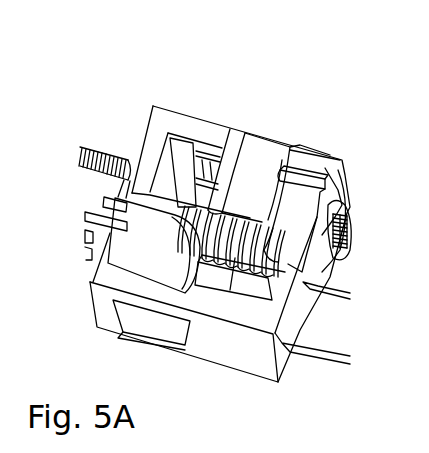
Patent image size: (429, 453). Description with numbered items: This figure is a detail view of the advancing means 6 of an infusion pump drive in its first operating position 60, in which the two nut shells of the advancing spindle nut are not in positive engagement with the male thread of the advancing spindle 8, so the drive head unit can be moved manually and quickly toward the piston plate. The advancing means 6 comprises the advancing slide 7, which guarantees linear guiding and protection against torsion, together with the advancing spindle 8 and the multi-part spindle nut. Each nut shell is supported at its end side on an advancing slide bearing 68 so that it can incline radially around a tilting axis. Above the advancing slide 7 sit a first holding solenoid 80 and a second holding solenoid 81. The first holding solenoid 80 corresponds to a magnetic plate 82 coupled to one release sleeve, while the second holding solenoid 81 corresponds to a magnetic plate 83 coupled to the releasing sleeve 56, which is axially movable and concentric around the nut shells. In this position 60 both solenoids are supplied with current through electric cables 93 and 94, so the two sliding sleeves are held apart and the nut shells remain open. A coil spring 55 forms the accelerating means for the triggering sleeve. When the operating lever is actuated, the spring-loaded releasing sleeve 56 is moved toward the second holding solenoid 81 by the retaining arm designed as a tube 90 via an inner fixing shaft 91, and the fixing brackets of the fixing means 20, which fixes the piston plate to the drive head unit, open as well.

The first operating position 60 is at (343, 73).
The advancing slide 7 is at (163, 113).
The releasing sleeve 56 is at (172, 163).
The magnetic plate 82 is at (236, 128).
The first holding solenoid 80 is at (275, 150).
The electric cable 93 is at (325, 182).
The advancing slide bearing 68 is at (350, 205).
The advancing means 6 is at (356, 255).
The advancing spindle 8 is at (95, 157).
The electric cable 94 is at (84, 212).
The second holding solenoid 81 is at (123, 265).
The magnetic plate 83 is at (180, 274).
The coil spring 55 is at (232, 290).
The tube 90 is at (342, 294).
The inner fixing shaft 91 is at (340, 327).
The fixing means 20 is at (323, 371).